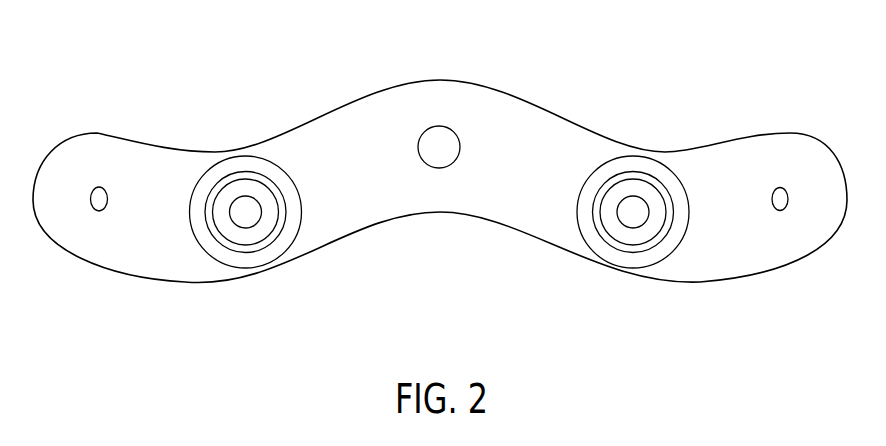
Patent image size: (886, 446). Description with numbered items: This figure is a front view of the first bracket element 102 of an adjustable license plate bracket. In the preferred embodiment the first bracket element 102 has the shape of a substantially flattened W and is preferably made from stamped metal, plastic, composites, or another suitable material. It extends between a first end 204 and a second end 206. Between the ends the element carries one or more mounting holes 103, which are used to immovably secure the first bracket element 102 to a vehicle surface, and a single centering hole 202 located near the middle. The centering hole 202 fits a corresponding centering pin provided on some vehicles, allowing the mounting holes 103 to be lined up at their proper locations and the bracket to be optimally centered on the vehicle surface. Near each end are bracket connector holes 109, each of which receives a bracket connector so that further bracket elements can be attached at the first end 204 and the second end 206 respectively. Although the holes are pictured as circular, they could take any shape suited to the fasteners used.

The first bracket element 102 is at (440, 153).
The mounting holes 103 is at (243, 228).
The bracket connector holes 109 is at (98, 211).
The centering hole 202 is at (437, 127).
The first end 204 is at (93, 125).
The second end 206 is at (722, 102).